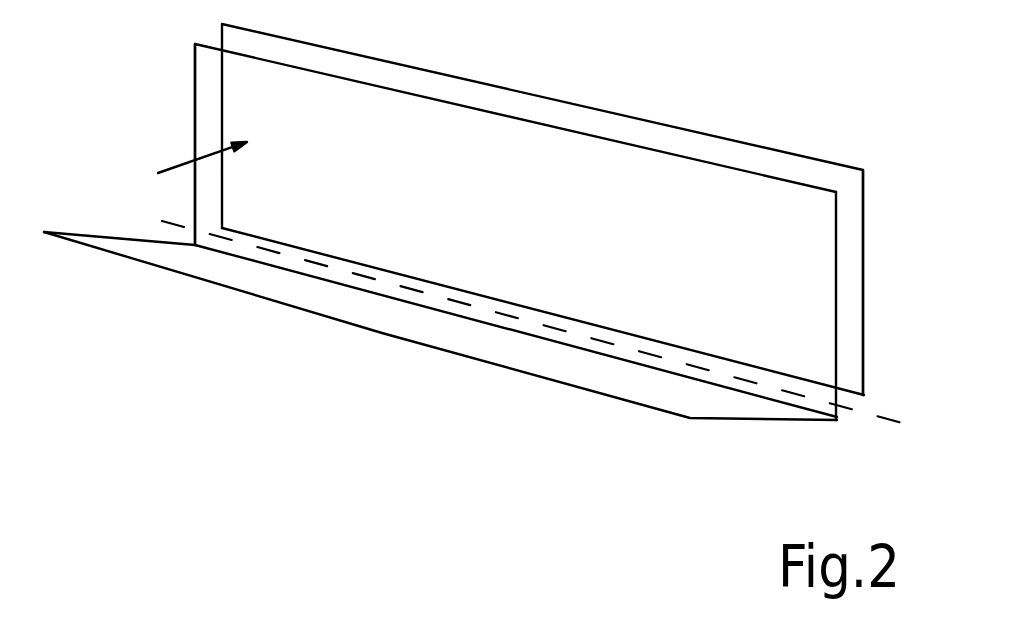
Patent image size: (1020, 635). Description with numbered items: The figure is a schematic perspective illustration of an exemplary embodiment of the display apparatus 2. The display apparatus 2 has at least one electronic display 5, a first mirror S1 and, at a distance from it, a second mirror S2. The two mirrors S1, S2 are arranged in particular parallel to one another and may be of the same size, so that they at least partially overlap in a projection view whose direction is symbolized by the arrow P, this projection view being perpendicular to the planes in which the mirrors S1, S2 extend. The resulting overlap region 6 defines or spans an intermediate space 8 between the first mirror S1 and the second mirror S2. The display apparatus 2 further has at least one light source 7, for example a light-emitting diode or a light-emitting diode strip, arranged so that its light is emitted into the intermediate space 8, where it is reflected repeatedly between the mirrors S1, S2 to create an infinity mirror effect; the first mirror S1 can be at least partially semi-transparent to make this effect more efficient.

The display apparatus 2 is at (512, 226).
The electronic display 5 is at (208, 280).
The overlap region 6 is at (535, 151).
The light source 7 is at (887, 423).
The intermediate space 8 is at (854, 238).
The first mirror S1 is at (195, 91).
The second mirror S2 is at (866, 280).
The arrow P is at (158, 173).